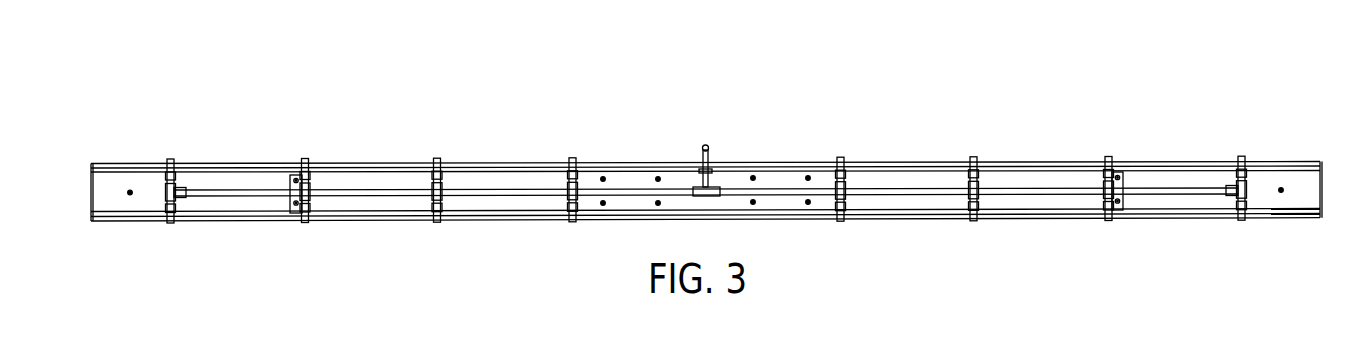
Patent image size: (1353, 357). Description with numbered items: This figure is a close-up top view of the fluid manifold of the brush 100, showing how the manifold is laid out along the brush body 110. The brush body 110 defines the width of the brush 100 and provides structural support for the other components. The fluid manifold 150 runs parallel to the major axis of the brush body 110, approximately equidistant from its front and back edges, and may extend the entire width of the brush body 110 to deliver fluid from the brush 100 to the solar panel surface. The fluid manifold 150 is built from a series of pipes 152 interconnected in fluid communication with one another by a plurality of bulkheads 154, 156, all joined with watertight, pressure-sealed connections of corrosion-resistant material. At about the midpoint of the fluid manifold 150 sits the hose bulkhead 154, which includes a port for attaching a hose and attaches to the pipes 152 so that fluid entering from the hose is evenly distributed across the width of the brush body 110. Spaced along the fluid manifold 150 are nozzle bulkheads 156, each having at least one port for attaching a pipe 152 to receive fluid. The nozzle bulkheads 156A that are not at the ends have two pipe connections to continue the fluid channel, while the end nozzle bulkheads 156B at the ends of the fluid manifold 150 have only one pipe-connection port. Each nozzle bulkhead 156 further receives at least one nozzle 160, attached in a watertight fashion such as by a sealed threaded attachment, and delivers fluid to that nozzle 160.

The brush 100 is at (973, 81).
The brush body 110 is at (513, 218).
The fluid manifold 150 is at (502, 187).
The pipes 152 is at (372, 196).
The hose bulkhead 154 is at (709, 157).
The nozzle bulkhead 156 is at (968, 196).
The nozzle bulkhead not at the ends 156A is at (850, 178).
The end nozzle bulkhead 156B is at (166, 193).
The nozzle 160 is at (305, 160).